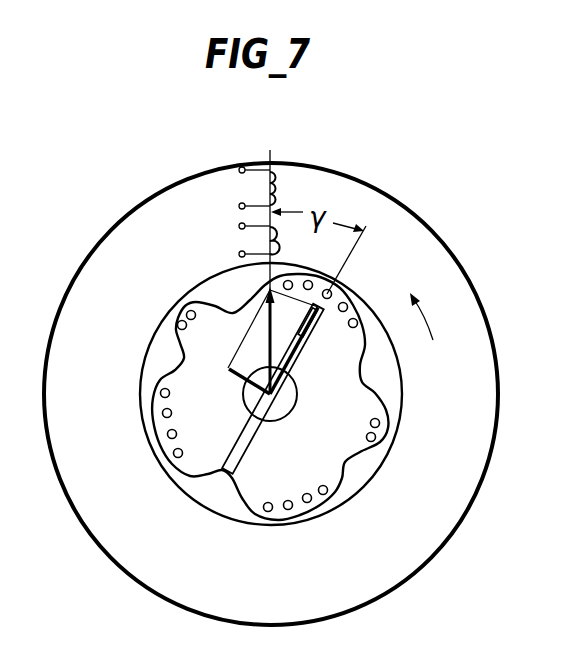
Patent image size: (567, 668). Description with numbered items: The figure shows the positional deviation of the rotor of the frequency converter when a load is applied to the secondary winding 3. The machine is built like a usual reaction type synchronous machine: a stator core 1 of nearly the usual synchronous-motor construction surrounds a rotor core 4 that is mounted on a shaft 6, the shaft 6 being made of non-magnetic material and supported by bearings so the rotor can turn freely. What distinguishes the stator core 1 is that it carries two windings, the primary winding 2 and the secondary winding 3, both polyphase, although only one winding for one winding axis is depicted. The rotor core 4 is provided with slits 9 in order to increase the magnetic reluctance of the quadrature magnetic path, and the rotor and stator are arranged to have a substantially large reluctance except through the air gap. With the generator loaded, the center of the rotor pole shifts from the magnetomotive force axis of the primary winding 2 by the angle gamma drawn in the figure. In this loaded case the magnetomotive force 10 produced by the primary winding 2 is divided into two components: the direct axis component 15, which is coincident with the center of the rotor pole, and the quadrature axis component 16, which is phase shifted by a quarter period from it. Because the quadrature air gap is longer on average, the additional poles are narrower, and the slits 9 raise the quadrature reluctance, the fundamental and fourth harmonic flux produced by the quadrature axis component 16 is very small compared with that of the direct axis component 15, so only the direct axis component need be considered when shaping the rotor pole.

The stator core 1 is at (475, 462).
The primary winding 2 is at (278, 181).
The secondary winding 3 is at (278, 241).
The rotor core 4 is at (353, 389).
The shaft 6 is at (292, 413).
The slits 9 is at (245, 449).
The magnetomotive force 10 is at (268, 317).
The direct axis component 15 is at (303, 337).
The quadrature axis component 16 is at (227, 367).